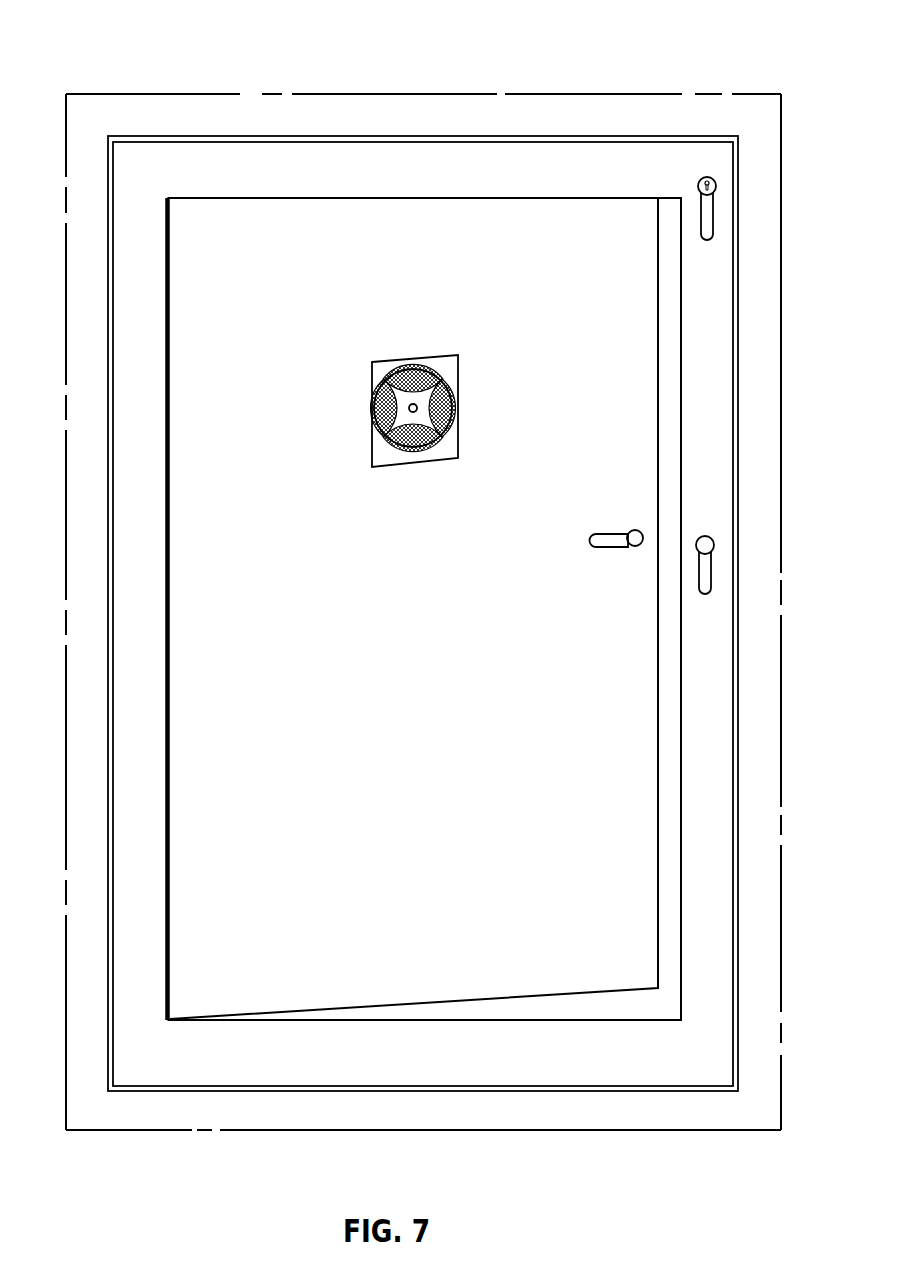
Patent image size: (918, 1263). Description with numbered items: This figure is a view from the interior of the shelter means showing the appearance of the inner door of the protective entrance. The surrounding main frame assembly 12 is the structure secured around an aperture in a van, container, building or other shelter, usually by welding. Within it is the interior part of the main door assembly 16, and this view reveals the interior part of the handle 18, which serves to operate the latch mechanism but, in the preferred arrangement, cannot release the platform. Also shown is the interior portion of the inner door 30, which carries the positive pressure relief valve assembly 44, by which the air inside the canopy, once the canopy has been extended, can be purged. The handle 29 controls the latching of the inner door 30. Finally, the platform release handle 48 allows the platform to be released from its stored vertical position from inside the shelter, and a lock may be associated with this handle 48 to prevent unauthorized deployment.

The main frame assembly 12 is at (256, 117).
The main door assembly 16 is at (712, 876).
The handle 18 is at (707, 580).
The handle 29 is at (590, 540).
The inner door 30 is at (323, 252).
The positive pressure relief valve assembly 44 is at (452, 375).
The platform release handle 48 is at (707, 235).